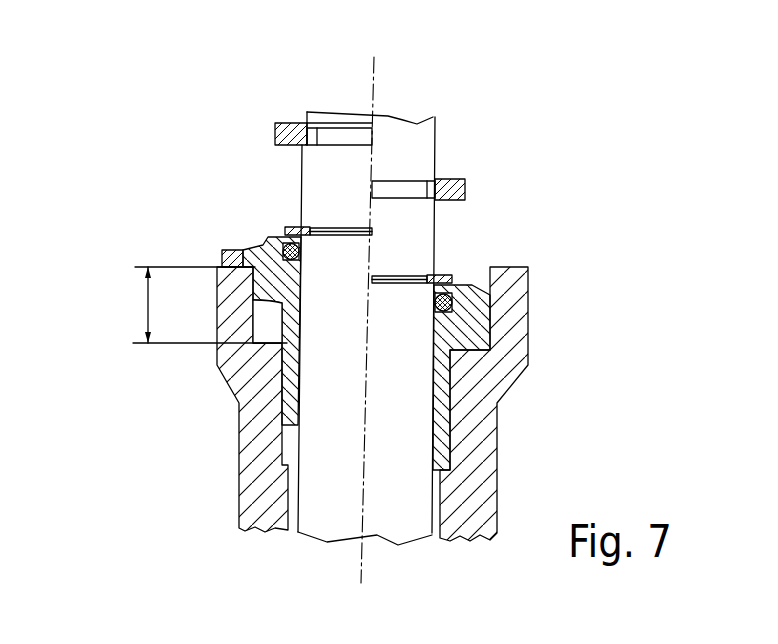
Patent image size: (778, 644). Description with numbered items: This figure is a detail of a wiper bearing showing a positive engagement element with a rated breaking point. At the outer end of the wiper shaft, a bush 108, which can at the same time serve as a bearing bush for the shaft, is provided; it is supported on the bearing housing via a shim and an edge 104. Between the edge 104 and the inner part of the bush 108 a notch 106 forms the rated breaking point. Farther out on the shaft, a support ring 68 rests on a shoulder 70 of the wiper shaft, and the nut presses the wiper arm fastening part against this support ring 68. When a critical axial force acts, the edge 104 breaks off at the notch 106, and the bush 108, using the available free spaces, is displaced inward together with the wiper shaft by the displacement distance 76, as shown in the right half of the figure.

The support ring 68 is at (283, 123).
The shoulder 70 is at (360, 138).
The displacement distance 76 is at (148, 289).
The edge 104 is at (222, 250).
The notch 106 is at (265, 247).
The bush 108 is at (287, 344).